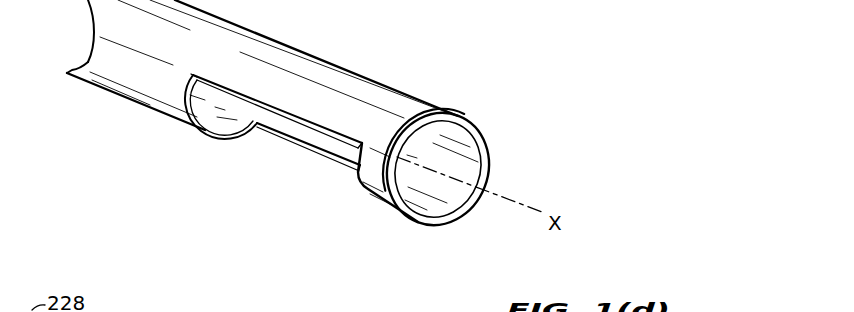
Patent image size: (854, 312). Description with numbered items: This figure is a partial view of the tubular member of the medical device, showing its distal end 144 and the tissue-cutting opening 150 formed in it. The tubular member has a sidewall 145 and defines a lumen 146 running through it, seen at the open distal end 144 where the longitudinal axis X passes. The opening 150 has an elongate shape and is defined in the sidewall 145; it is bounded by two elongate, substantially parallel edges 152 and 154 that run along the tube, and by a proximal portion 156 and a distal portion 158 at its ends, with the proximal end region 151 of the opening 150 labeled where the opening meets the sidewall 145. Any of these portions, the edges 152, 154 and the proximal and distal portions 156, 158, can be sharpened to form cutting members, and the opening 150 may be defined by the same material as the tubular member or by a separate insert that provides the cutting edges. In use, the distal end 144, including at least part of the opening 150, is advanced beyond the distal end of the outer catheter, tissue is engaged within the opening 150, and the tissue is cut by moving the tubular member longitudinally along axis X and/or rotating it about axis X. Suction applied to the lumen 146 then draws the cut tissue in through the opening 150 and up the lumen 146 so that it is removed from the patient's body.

The distal end 144 is at (499, 140).
The sidewall 145 is at (125, 73).
The lumen 146 is at (437, 190).
The opening 150 is at (265, 145).
The proximal end of slot 151 is at (200, 53).
The elongate edge 152 is at (298, 147).
The elongate edge 154 is at (283, 121).
The proximal portion of opening 156 is at (206, 136).
The distal portion of opening 158 is at (358, 183).